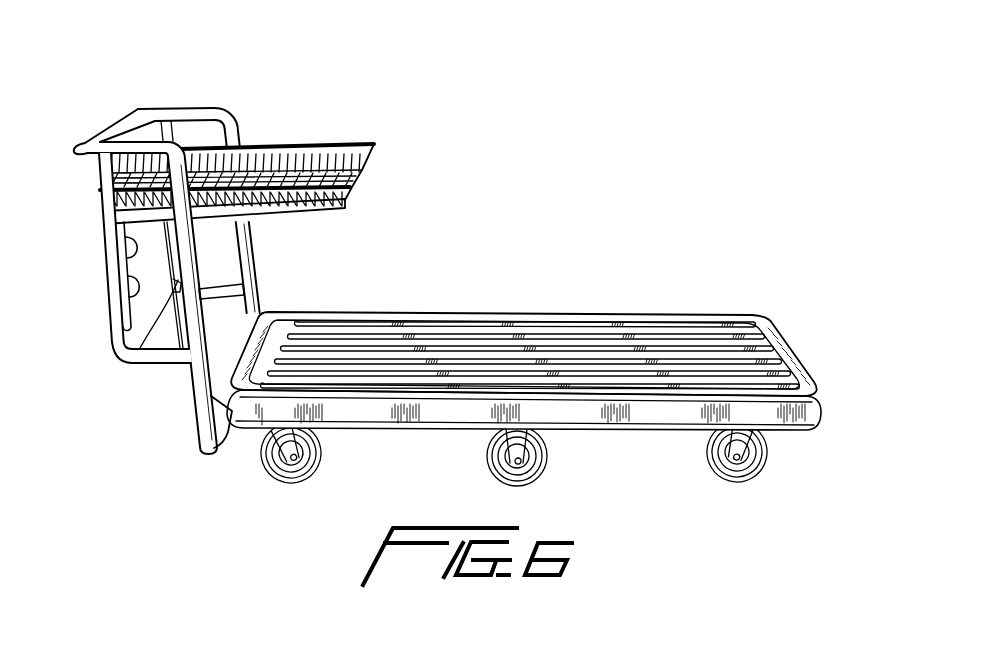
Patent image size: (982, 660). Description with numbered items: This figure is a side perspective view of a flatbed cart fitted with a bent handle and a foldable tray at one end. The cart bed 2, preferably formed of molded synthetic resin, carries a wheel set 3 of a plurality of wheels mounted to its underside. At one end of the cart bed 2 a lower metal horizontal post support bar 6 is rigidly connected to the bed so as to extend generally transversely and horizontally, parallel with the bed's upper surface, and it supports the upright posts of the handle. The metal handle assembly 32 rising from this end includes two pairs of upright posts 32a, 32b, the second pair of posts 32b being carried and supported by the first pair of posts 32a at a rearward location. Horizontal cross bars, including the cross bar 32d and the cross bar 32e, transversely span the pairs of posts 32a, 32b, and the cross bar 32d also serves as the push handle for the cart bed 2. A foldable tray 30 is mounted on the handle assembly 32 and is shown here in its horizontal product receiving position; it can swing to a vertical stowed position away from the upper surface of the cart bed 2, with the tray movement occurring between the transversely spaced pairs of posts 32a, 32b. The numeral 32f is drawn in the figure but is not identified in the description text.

The cart bed 2 is at (583, 322).
The wheel set 3 is at (764, 470).
The lower horizontal post support bar 6 is at (222, 440).
The foldable tray 30 is at (352, 142).
The handle assembly 32 is at (229, 106).
The first pair of upright posts 32a is at (256, 262).
The second pair of upright posts 32b is at (116, 356).
The horizontal cross bar 32d is at (108, 122).
The horizontal cross bar 32e is at (124, 257).
The hook 32f is at (128, 296).